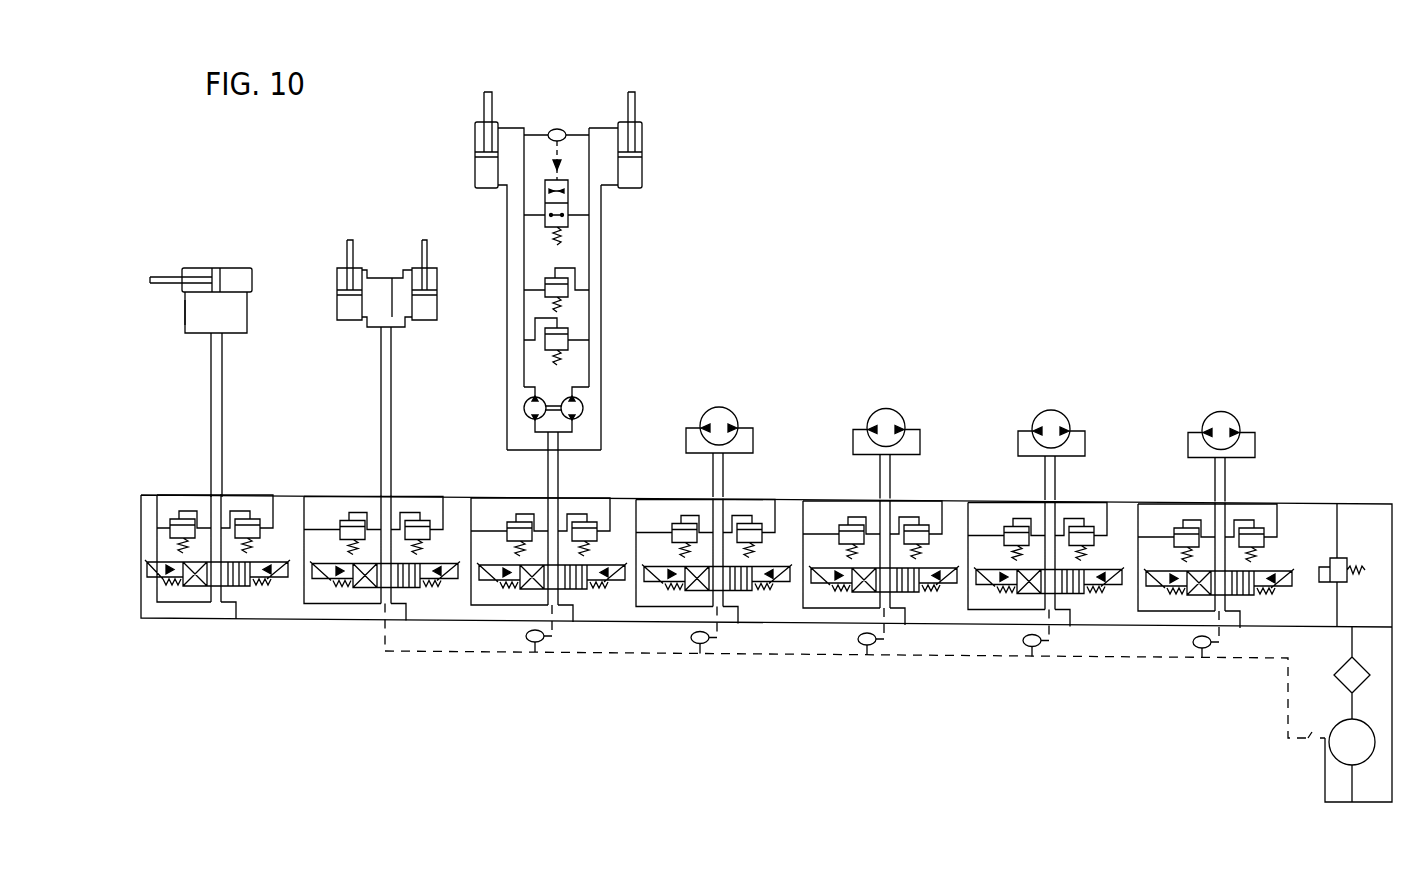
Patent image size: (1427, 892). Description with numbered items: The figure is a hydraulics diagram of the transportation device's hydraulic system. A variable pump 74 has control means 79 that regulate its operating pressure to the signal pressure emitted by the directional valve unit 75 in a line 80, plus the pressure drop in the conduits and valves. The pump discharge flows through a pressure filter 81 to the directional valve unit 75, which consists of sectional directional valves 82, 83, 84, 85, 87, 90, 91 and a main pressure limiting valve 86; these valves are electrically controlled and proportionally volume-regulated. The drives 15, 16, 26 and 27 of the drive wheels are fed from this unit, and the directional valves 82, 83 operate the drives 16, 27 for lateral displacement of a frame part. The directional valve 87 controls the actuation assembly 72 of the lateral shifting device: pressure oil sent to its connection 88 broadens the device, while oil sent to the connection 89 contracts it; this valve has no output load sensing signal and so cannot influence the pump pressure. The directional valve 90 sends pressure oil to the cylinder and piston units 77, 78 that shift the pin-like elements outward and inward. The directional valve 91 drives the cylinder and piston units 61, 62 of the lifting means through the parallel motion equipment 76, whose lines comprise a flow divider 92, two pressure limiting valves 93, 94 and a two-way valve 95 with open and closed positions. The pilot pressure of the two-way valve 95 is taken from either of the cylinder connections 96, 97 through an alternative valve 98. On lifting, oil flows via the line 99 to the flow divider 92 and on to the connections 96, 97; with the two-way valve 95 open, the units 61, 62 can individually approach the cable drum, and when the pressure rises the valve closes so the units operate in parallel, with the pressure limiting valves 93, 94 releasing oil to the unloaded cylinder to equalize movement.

The drive 15 is at (897, 412).
The drive 16 is at (1230, 413).
The drive 26 is at (728, 410).
The drive 27 is at (1062, 412).
The cylinder and piston unit 61 is at (653, 112).
The cylinder and piston unit 62 is at (471, 112).
The actuation assembly 72 is at (214, 256).
The variable pump 74 is at (1331, 762).
The directional valve unit 75 is at (1301, 466).
The parallel motion equipment 76 is at (641, 252).
The cylinder and piston unit 77 is at (339, 258).
The cylinder and piston unit 78 is at (434, 258).
The control means 79 is at (1308, 740).
The line 80 is at (1289, 687).
The pressure filter 81 is at (1356, 655).
The directional valve 82 is at (1152, 596).
The directional valve 83 is at (985, 590).
The directional valve 84 is at (823, 590).
The directional valve 85 is at (657, 590).
The pressure relief valve 86 is at (1342, 557).
The directional valve 87 is at (258, 598).
The connection 88 is at (243, 313).
The connection 89 is at (183, 313).
The directional valve 90 is at (424, 598).
The directional valve 91 is at (510, 590).
The flow divider 92 is at (551, 403).
The pressure limiting valve 93 is at (568, 335).
The pressure limiting valve 94 is at (568, 293).
The two-way valve 95 is at (570, 197).
The connection 96 is at (607, 126).
The connection 97 is at (513, 126).
The alternative valve 98 is at (556, 128).
The line 99 is at (559, 478).